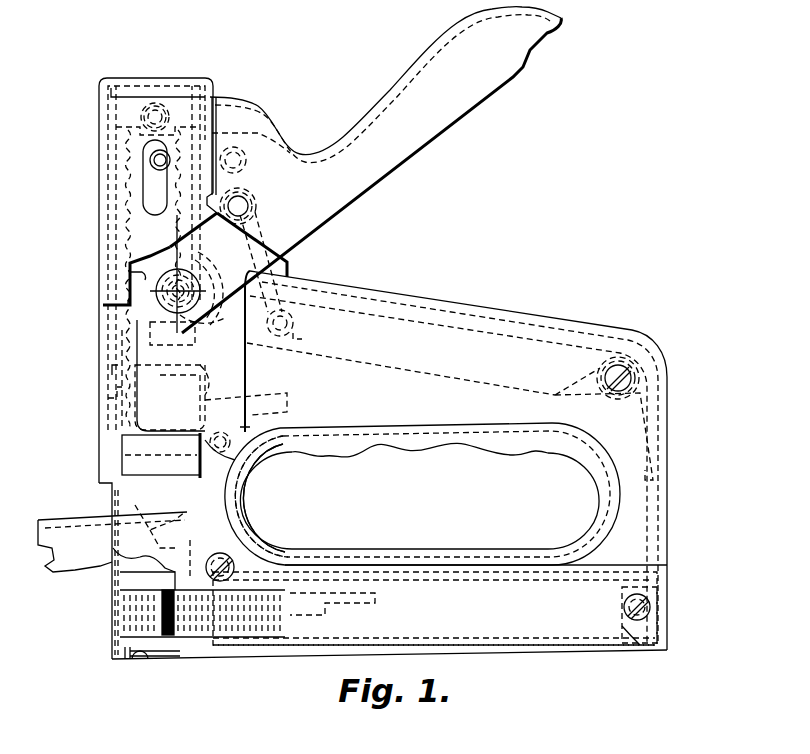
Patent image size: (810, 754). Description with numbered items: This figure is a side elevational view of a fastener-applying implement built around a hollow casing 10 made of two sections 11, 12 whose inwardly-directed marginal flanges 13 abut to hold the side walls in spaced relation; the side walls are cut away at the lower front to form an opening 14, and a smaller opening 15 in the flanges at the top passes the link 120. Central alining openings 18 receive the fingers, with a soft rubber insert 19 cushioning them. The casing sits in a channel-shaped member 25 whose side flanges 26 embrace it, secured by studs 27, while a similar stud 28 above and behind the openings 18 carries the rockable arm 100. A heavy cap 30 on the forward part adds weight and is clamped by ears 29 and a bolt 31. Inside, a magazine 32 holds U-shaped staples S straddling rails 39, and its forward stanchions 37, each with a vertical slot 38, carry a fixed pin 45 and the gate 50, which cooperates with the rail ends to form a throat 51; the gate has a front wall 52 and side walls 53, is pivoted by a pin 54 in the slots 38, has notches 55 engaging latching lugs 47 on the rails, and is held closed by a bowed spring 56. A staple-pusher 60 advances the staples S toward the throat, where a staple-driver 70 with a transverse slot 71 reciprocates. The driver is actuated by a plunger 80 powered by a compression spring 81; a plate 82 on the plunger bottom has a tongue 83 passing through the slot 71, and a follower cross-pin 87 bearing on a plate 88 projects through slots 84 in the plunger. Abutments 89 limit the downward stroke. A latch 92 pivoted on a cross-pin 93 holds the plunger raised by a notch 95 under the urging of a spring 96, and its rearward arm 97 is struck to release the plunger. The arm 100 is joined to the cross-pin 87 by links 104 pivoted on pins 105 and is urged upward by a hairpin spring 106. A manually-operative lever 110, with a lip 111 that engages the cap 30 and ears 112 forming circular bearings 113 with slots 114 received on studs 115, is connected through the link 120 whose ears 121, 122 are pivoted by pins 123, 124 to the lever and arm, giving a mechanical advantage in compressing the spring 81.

The hollow casing 10 is at (667, 497).
The casing section 11 is at (185, 252).
The casing section 12 is at (505, 328).
The marginal flanges 13 is at (660, 522).
The opening 14 is at (108, 490).
The smaller opening 15 is at (318, 283).
The alining openings 18 is at (470, 432).
The insert 19 is at (531, 448).
The channel-shaped member 25 is at (545, 653).
The side flanges 26 is at (655, 588).
The studs 27 is at (243, 560).
The stud 28 is at (632, 378).
The ears 29 is at (232, 135).
The cap 30 is at (105, 84).
The bolt 31 is at (243, 160).
The magazine 32 is at (660, 630).
The stanchions 37 is at (232, 482).
The vertically-extending slot 38 is at (142, 520).
The rails 39 is at (640, 648).
The fixed pin 45 is at (190, 565).
The raised lugs 47 is at (148, 664).
The gate 50 is at (52, 518).
The throat 51 is at (127, 662).
The front wall 52 is at (115, 625).
The side walls 53 is at (130, 592).
The pin 54 is at (140, 545).
The notches 55 is at (138, 664).
The bowed spring 56 is at (225, 500).
The staple-pusher 60 is at (355, 603).
The staple-driver 70 is at (120, 572).
The transverse slot 71 is at (108, 392).
The plunger 80 is at (110, 340).
The compression spring 81 is at (125, 183).
The plate 82 is at (170, 375).
The tongue 83 is at (112, 372).
The slots 84 is at (145, 215).
The cross-pin 87 is at (150, 113).
The plate 88 is at (120, 128).
The abutments 89 is at (173, 462).
The latch 92 is at (190, 404).
The cross-pin 93 is at (228, 445).
The notch 95 is at (206, 386).
The spring 96 is at (222, 452).
The arm 97 is at (290, 397).
The rockable arm 100 is at (416, 372).
The links 104 is at (148, 255).
The pins 105 is at (190, 345).
The hairpin spring 106 is at (640, 410).
The manually-operative lever 110 is at (380, 115).
The lip 111 is at (216, 97).
The ears 112 is at (213, 320).
The circular bearings 113 is at (175, 240).
The slots 114 is at (130, 273).
The studs 115 is at (128, 297).
The link 120 is at (292, 265).
The ears 121 is at (252, 192).
The ears 122 is at (302, 339).
The pin 123 is at (248, 206).
The pin 124 is at (294, 323).
The staples S is at (288, 622).